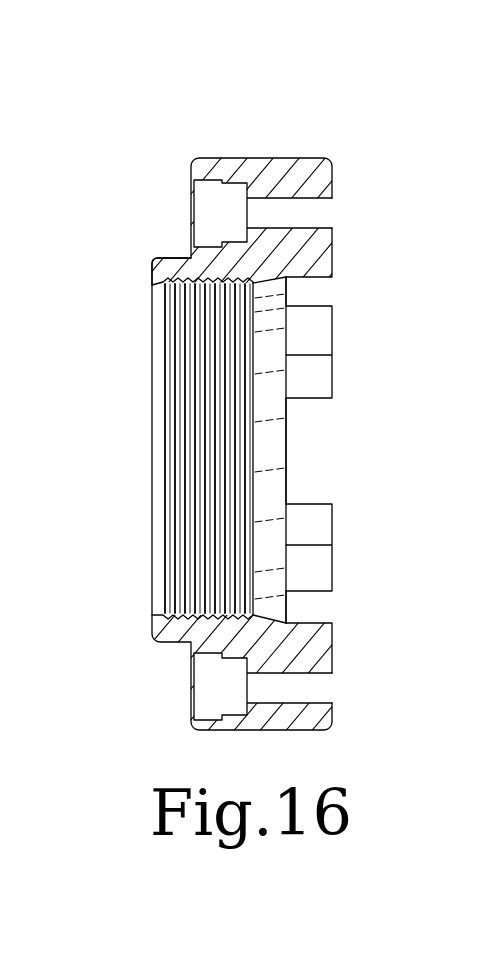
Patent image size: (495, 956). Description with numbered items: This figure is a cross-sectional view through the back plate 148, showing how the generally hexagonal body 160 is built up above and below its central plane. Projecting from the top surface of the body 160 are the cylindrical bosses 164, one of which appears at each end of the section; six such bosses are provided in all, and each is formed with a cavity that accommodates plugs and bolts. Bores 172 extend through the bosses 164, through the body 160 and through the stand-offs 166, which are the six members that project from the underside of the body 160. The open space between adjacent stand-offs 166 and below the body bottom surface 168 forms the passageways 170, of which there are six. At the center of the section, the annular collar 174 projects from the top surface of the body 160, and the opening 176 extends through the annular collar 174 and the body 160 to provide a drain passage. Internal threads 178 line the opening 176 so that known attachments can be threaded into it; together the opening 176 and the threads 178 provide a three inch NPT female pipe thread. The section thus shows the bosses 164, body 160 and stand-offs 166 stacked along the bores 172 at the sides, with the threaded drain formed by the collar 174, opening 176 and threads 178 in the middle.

The back plate 148 is at (247, 370).
The body 160 is at (262, 159).
The cylindrical bosses 164 is at (202, 159).
The stand-offs 166 is at (313, 249).
The body bottom surface 168 is at (287, 447).
The passageways 170 is at (312, 288).
The bores 172 is at (302, 210).
The annular collar 174 is at (163, 275).
The opening 176 is at (140, 431).
The internal threads 178 is at (183, 507).